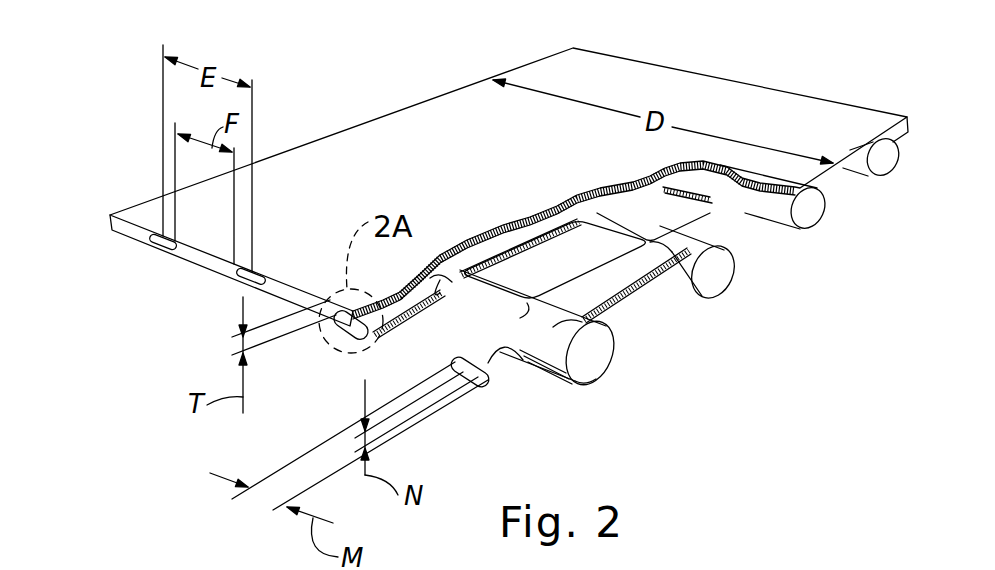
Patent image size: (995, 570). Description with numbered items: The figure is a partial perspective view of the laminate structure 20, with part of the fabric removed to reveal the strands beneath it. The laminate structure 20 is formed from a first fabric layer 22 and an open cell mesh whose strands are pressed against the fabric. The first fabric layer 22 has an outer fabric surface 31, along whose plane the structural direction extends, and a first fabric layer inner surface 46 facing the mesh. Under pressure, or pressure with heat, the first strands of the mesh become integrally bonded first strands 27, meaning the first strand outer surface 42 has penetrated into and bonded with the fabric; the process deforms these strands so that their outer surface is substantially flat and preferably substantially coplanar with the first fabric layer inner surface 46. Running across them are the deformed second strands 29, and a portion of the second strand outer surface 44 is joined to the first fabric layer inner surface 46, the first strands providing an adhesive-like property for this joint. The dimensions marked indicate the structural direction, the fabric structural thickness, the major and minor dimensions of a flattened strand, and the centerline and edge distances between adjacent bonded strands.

The laminate structure 20 is at (362, 63).
The first fabric layer 22 is at (822, 113).
The outer fabric surface 31 is at (713, 93).
The first fabric layer inner surface 46 is at (123, 237).
The deformed second strands 29 is at (808, 206).
The integrally bonded first strands 27 is at (157, 247).
The first strand outer surface 42 is at (517, 353).
The second strand outer surface 44 is at (593, 378).